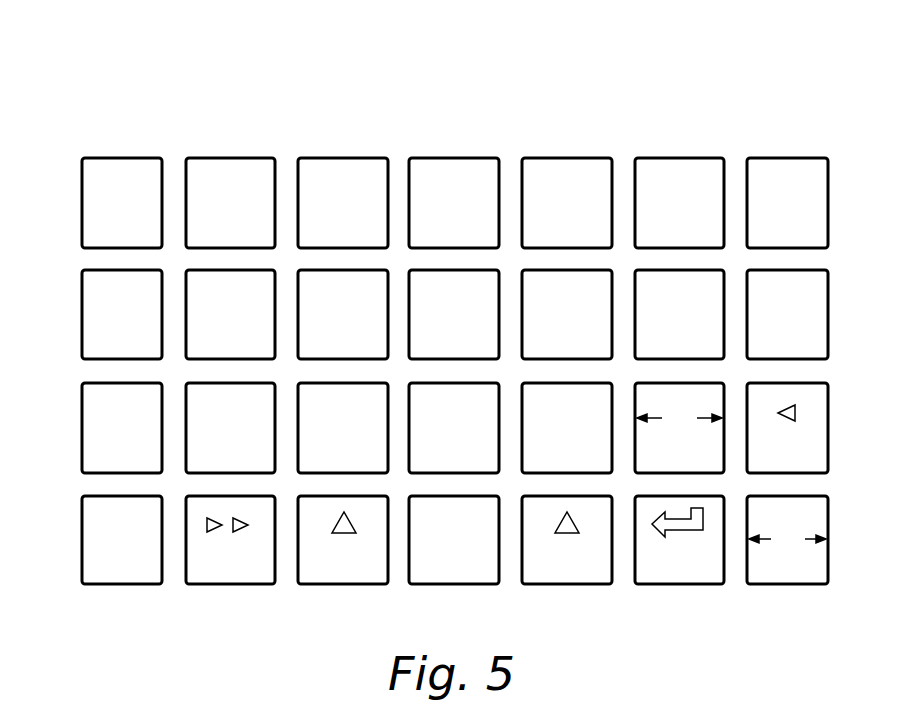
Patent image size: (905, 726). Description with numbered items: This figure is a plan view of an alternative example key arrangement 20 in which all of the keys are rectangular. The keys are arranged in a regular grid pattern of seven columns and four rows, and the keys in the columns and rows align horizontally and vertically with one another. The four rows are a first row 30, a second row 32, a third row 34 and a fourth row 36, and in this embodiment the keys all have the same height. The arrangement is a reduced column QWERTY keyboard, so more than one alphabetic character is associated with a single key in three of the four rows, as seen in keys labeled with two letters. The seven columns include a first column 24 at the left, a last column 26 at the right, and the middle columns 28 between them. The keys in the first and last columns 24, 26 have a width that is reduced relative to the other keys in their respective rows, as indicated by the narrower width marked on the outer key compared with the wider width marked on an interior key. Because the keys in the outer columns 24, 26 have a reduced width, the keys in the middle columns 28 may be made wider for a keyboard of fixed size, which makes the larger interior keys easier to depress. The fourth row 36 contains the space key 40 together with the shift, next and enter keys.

The key arrangement 20 is at (733, 78).
The first column 24 is at (120, 158).
The last column 26 is at (789, 158).
The middle columns 28 is at (231, 158).
The first row 30 is at (82, 203).
The second row 32 is at (82, 316).
The third row 34 is at (82, 431).
The fourth row 36 is at (82, 531).
The space key 40 is at (456, 584).